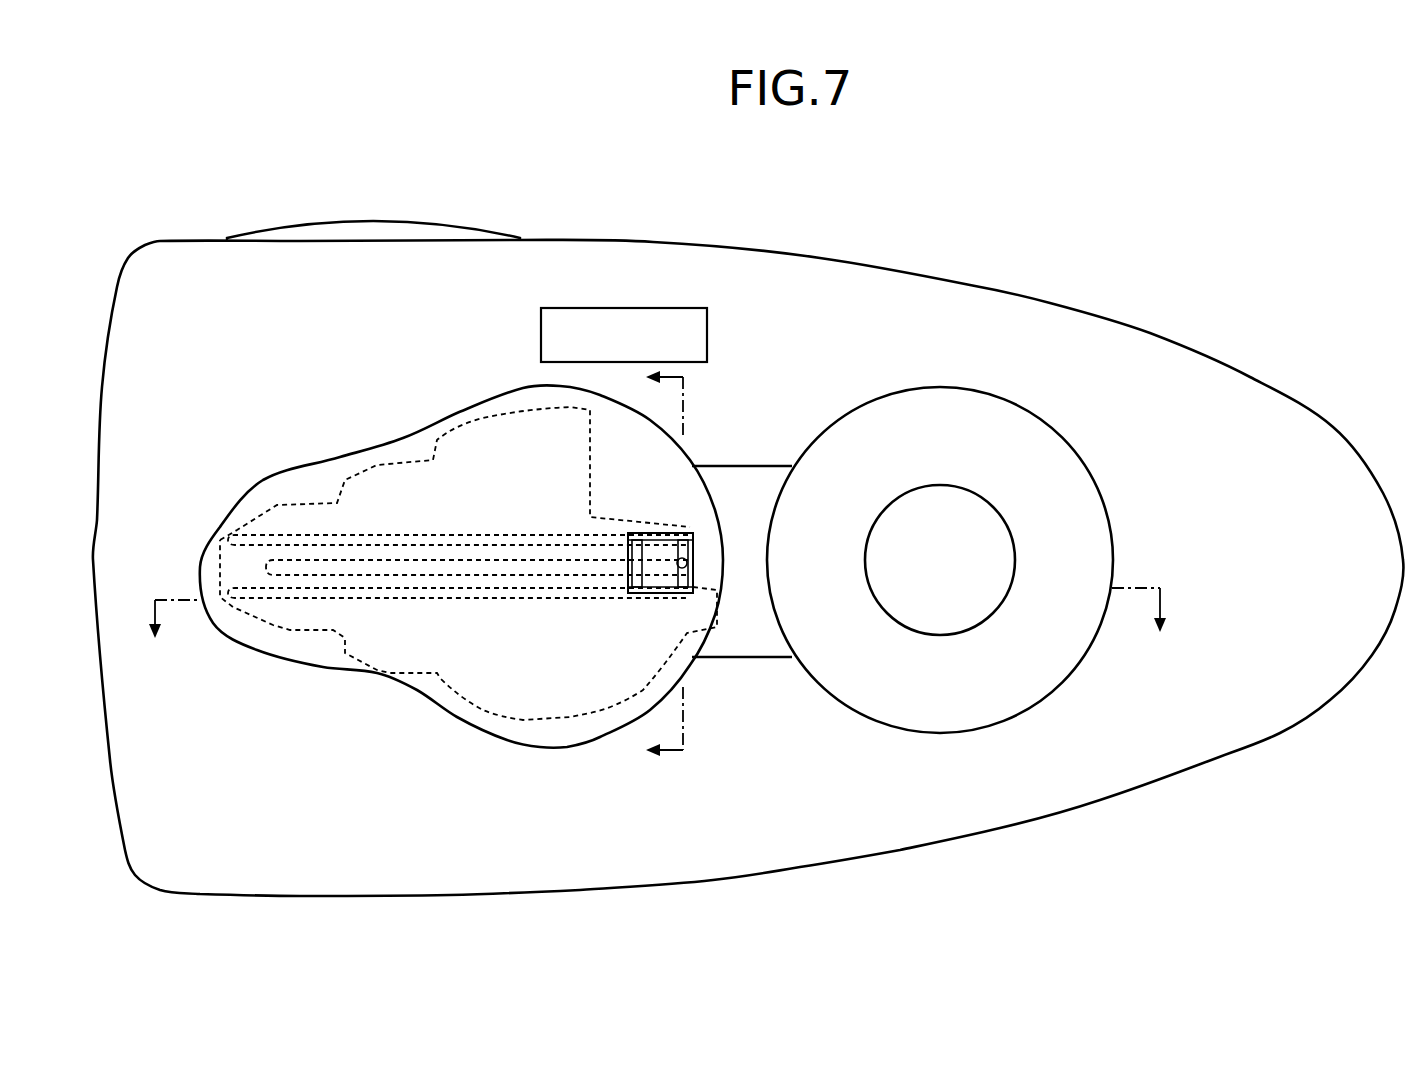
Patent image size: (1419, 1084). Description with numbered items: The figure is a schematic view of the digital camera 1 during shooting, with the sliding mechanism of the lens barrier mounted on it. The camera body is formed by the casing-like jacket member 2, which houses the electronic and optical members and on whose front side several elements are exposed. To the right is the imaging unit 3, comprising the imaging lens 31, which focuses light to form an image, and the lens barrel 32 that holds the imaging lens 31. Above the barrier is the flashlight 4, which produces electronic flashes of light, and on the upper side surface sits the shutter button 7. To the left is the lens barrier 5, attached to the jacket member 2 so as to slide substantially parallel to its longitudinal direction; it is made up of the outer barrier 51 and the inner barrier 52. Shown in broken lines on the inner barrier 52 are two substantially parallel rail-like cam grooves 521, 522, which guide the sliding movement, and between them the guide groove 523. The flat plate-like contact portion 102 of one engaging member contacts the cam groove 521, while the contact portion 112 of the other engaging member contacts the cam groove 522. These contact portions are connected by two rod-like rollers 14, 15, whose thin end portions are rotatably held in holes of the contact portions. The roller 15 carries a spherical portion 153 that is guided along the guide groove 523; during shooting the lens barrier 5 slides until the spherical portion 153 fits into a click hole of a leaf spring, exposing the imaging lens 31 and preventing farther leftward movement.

The digital camera 1 is at (1140, 230).
The jacket member 2 is at (1323, 463).
The imaging unit 3 is at (980, 655).
The imaging lens 31 is at (988, 620).
The lens barrel 32 is at (947, 683).
The flashlight 4 is at (623, 330).
The lens barrier 5 is at (656, 622).
The outer barrier 51 is at (310, 485).
The inner barrier 52 is at (400, 457).
The cam groove 521 is at (462, 540).
The cam groove 522 is at (462, 597).
The guide groove 523 is at (215, 540).
The shutter button 7 is at (373, 235).
The roller 14 is at (649, 527).
The roller 15 is at (691, 548).
The contact portion 102 is at (647, 540).
The contact portion 112 is at (650, 590).
The spherical portion 153 is at (690, 563).